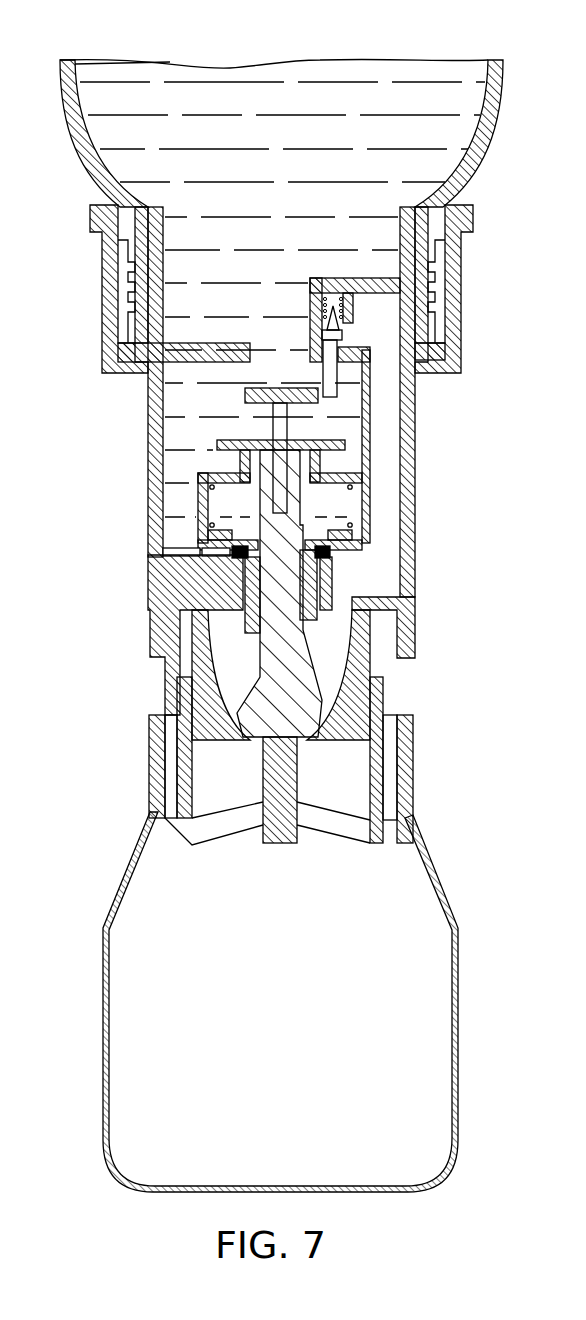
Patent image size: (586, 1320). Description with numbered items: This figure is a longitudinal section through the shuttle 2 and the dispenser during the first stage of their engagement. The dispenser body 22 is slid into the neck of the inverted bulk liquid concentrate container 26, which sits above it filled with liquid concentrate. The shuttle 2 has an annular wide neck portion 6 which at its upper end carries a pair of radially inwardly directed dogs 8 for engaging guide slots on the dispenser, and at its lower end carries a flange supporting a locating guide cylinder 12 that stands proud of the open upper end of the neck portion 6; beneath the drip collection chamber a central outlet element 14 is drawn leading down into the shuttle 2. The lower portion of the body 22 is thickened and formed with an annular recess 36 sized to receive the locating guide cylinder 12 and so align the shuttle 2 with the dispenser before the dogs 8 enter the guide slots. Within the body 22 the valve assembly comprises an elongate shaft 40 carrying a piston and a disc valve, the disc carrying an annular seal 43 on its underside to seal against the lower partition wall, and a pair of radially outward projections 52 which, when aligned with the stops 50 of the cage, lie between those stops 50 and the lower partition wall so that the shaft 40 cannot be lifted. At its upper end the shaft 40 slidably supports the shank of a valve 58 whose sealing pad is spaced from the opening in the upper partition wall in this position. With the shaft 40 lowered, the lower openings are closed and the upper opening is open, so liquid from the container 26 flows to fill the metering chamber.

The shuttle 2 is at (470, 1020).
The neck portion 6 is at (413, 770).
The dogs 8 is at (413, 721).
The locating guide cylinder 12 is at (193, 778).
The outlet tube 14 is at (280, 845).
The body 22 is at (148, 484).
The bulk liquid concentrate container 26 is at (483, 147).
The annular recess 36 is at (183, 633).
The shaft 40 is at (190, 677).
The annular seal 43 is at (150, 547).
The stops 50 is at (333, 527).
The projections 52 is at (367, 550).
The valve 58 is at (300, 398).